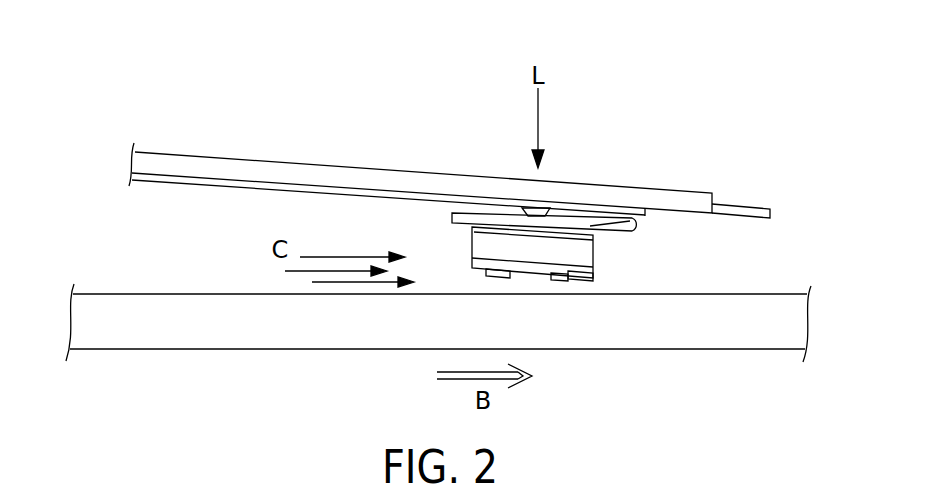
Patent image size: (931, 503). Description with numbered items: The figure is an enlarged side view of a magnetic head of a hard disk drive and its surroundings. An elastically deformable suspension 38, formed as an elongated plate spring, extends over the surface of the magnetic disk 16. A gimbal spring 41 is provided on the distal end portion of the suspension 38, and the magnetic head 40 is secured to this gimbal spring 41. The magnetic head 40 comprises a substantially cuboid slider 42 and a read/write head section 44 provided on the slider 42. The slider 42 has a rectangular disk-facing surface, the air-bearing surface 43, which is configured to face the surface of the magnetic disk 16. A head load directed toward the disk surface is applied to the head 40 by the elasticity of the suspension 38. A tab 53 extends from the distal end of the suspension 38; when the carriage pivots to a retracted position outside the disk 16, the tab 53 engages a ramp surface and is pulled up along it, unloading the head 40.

The magnetic disk 16 is at (250, 349).
The suspension 38 is at (295, 172).
The magnetic head 40 is at (458, 249).
The gimbal spring 41 is at (456, 210).
The slider 42 is at (563, 247).
The air-bearing surface 43 is at (533, 272).
The read/write head section 44 is at (588, 252).
The tab 53 is at (742, 208).